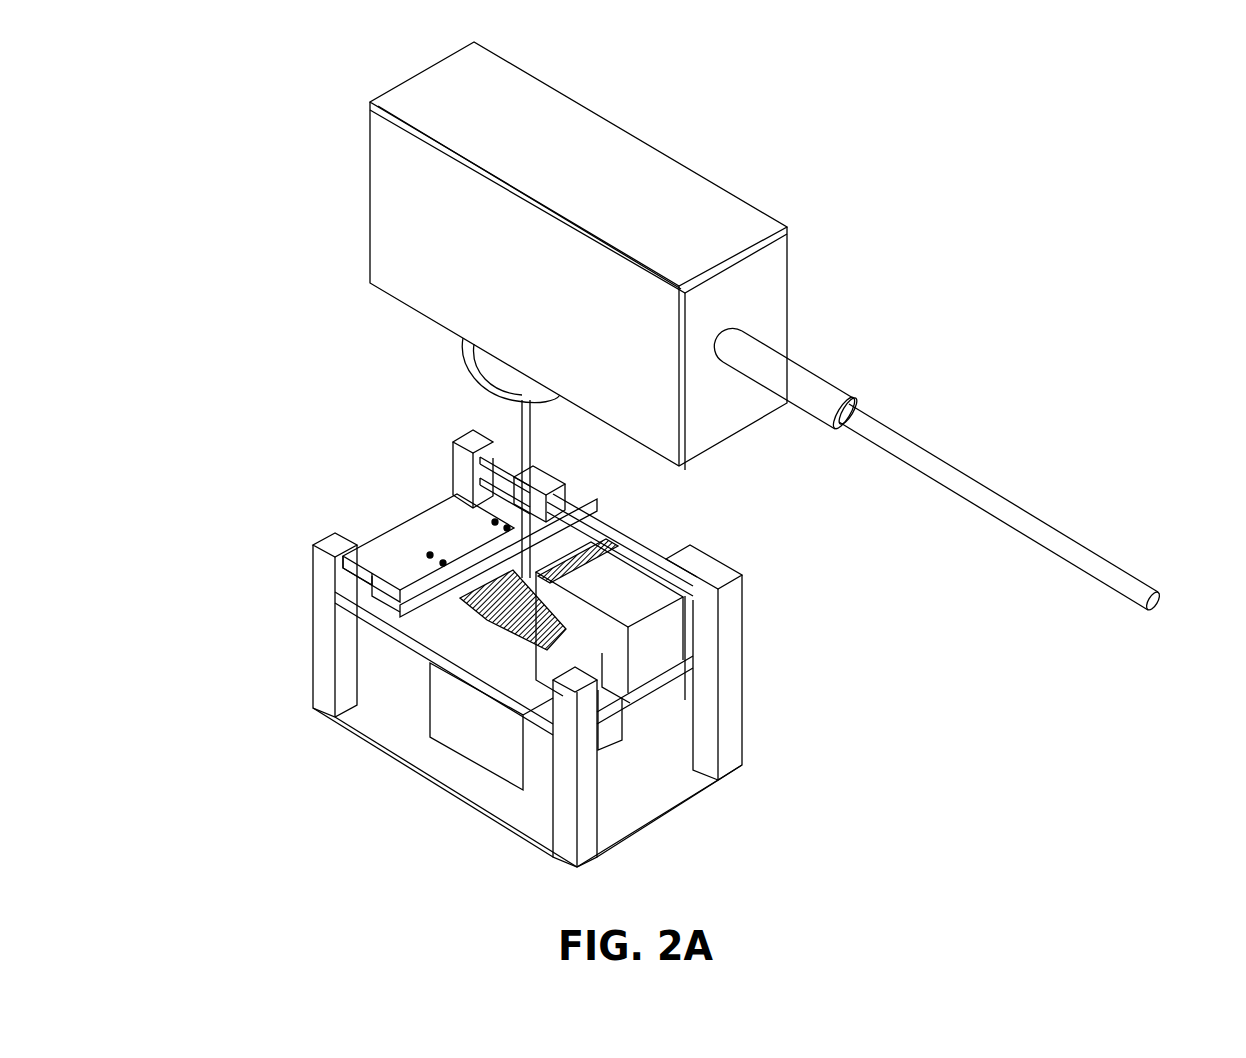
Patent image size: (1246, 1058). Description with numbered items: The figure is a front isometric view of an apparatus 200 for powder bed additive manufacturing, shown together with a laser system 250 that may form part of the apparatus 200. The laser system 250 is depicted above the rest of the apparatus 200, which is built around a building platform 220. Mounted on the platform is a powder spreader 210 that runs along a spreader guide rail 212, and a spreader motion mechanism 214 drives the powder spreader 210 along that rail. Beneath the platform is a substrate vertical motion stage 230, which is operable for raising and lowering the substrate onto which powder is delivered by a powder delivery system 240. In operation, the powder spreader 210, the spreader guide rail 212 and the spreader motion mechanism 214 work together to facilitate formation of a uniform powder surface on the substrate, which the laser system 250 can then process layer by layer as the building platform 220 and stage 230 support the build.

The apparatus 200 is at (1157, 75).
The powder spreader 210 is at (462, 547).
The spreader guide rail 212 is at (363, 570).
The spreader motion mechanism 214 is at (720, 606).
The building platform 220 is at (458, 648).
The substrate vertical motion stage 230 is at (487, 725).
The powder delivery system 240 is at (641, 645).
The laser system 250 is at (638, 172).